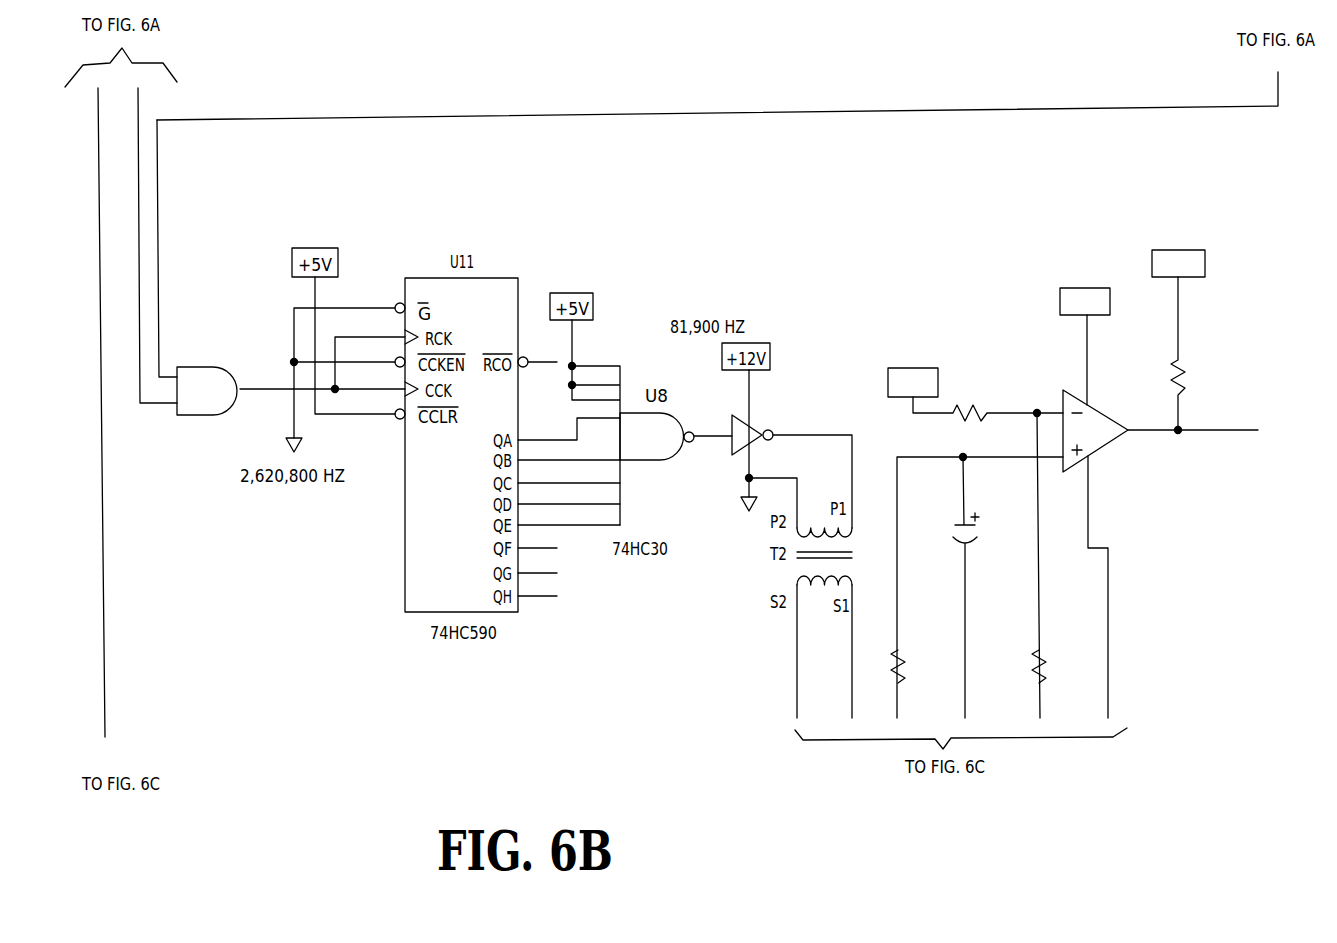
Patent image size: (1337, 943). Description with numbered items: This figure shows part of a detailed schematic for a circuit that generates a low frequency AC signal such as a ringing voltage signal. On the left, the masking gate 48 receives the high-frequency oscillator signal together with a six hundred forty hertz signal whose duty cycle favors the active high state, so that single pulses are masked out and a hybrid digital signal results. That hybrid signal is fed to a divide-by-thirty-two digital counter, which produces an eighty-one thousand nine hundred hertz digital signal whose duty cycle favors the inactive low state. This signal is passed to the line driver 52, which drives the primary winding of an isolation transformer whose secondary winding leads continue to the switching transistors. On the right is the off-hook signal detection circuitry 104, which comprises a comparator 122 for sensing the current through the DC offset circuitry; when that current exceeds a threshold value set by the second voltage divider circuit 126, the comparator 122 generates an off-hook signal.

The masking gate 48 is at (213, 383).
The line driver 52 is at (752, 430).
The second voltage divider circuit 126 is at (1020, 400).
The comparator 122 is at (1105, 408).
The off-hook signal detection circuitry 104 is at (1099, 484).